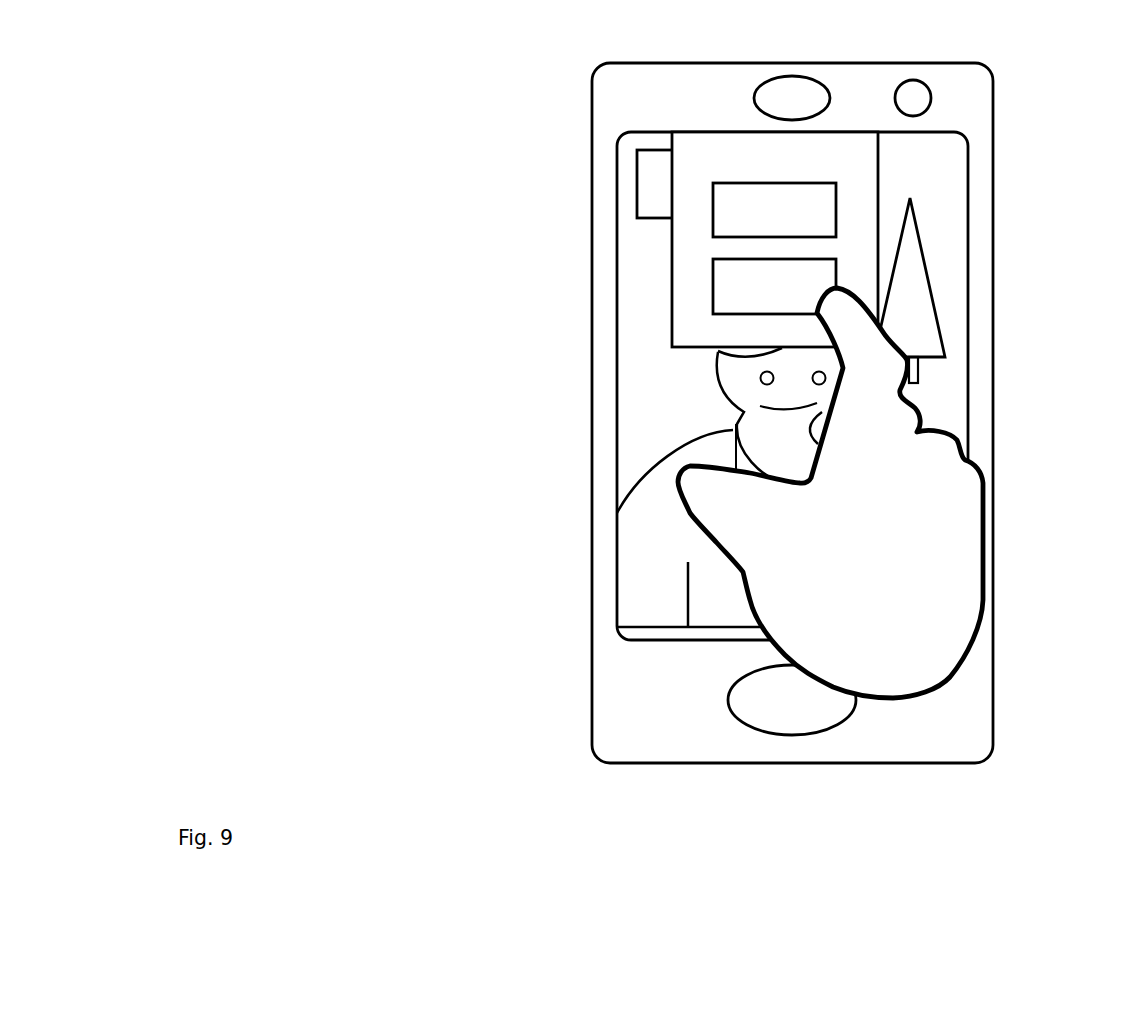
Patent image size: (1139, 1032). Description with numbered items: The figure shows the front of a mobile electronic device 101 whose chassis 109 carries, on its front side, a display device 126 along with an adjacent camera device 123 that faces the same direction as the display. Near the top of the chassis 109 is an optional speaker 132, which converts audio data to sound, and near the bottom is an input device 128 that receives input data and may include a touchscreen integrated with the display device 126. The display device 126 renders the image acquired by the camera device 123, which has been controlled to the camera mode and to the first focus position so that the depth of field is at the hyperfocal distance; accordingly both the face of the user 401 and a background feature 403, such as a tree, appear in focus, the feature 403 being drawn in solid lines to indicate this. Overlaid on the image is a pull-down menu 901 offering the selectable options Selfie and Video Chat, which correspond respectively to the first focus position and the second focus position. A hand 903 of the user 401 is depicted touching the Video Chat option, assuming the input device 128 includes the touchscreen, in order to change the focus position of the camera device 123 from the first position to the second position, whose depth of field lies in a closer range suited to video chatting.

The mobile electronic device 101 is at (552, 668).
The chassis 109 is at (592, 254).
The camera device 123 is at (932, 97).
The display device 126 is at (938, 202).
The input device 128 is at (812, 710).
The speaker 132 is at (810, 108).
The user 401 is at (680, 548).
The feature 403 is at (930, 323).
The pull-down menu 901 is at (682, 305).
The hand 903 is at (892, 600).